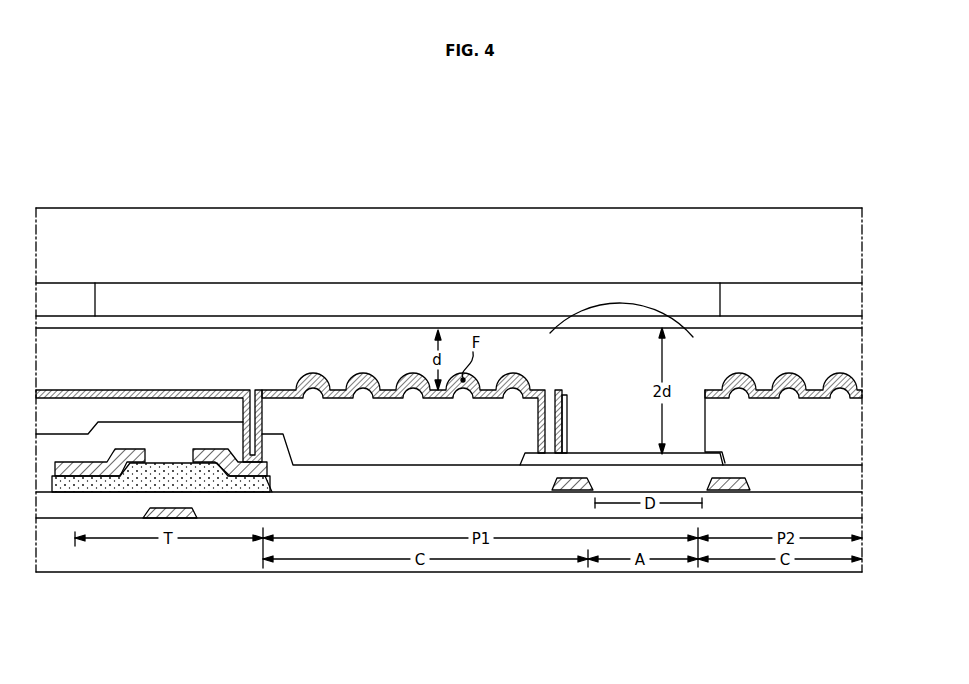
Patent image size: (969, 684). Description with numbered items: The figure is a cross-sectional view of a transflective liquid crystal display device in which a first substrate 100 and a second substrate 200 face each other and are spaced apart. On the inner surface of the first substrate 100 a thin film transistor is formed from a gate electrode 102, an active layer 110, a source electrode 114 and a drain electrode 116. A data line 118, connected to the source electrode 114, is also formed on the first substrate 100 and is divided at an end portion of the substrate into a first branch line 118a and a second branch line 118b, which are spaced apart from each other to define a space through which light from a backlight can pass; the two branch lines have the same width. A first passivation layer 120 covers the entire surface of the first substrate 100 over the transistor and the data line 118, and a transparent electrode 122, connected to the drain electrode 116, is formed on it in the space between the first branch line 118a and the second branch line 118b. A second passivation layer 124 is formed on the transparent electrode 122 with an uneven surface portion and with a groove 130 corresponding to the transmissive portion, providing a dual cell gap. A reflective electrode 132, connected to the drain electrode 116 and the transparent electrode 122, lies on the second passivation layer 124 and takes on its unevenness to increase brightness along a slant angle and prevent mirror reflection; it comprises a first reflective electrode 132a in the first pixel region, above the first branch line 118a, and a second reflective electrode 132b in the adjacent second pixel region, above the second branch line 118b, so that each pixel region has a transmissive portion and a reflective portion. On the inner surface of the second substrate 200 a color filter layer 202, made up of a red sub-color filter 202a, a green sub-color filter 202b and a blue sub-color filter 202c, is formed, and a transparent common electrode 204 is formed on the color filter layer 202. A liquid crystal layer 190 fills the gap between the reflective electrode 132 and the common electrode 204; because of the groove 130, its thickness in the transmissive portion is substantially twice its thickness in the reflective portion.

The first substrate 100 is at (72, 565).
The gate electrode 102 is at (187, 519).
The active layer 110 is at (230, 493).
The source electrode 114 is at (126, 449).
The drain electrode 116 is at (210, 449).
The data line 118 is at (639, 569).
The first branch line 118a is at (563, 491).
The second branch line 118b is at (720, 548).
The first passivation layer 120 is at (165, 432).
The transparent electrode 122 is at (593, 453).
The second passivation layer 124 is at (70, 410).
The groove 130 is at (616, 410).
The reflective electrode 132 is at (621, 310).
The first reflective electrode 132a is at (520, 378).
The second reflective electrode 132b is at (722, 380).
The liquid crystal layer 190 is at (848, 353).
The second substrate 200 is at (474, 248).
The color filter layer 202 is at (727, 163).
The red sub-color filter 202a is at (76, 292).
The green sub-color filter 202b is at (350, 292).
The blue sub-color filter 202c is at (742, 294).
The common electrode 204 is at (852, 321).